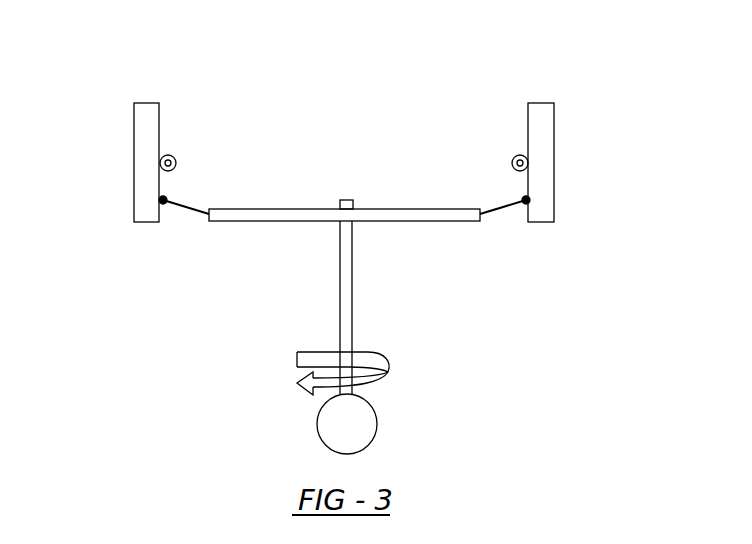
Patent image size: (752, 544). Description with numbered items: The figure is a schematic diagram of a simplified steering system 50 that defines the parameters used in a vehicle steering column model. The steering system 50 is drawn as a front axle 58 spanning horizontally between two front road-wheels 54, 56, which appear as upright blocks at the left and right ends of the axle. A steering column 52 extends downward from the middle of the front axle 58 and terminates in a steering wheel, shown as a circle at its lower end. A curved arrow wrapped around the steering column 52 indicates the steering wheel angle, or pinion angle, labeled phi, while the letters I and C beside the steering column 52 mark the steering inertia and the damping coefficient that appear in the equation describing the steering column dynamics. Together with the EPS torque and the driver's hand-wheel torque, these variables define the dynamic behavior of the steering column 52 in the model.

The steering system 50 is at (557, 73).
The steering column 52 is at (352, 318).
The front road-wheel 54 is at (134, 190).
The front road-wheel 56 is at (554, 192).
The front axle 58 is at (293, 209).